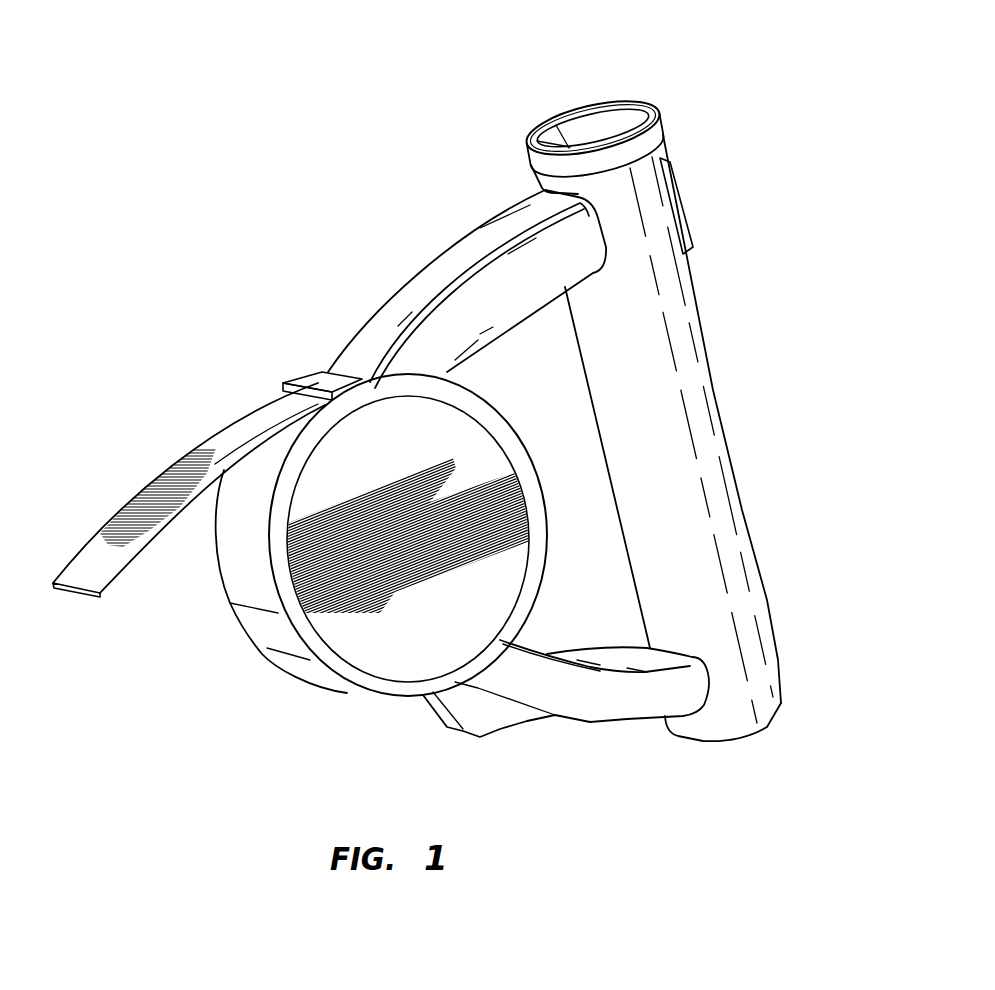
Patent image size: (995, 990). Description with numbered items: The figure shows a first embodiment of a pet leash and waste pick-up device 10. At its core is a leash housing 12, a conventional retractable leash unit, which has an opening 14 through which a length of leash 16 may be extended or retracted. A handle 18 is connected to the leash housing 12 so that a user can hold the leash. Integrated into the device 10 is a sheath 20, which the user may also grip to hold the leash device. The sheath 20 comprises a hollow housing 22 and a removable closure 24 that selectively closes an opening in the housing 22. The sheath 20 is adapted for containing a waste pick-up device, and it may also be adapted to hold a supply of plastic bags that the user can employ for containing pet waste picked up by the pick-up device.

The pet leash and waste pick-up device 10 is at (212, 135).
The leash housing 12 is at (270, 648).
The opening 14 is at (284, 390).
The leash 16 is at (155, 495).
The handle 18 is at (418, 292).
The sheath 20 is at (668, 322).
The hollow housing 22 is at (697, 386).
The removable closure 24 is at (627, 108).